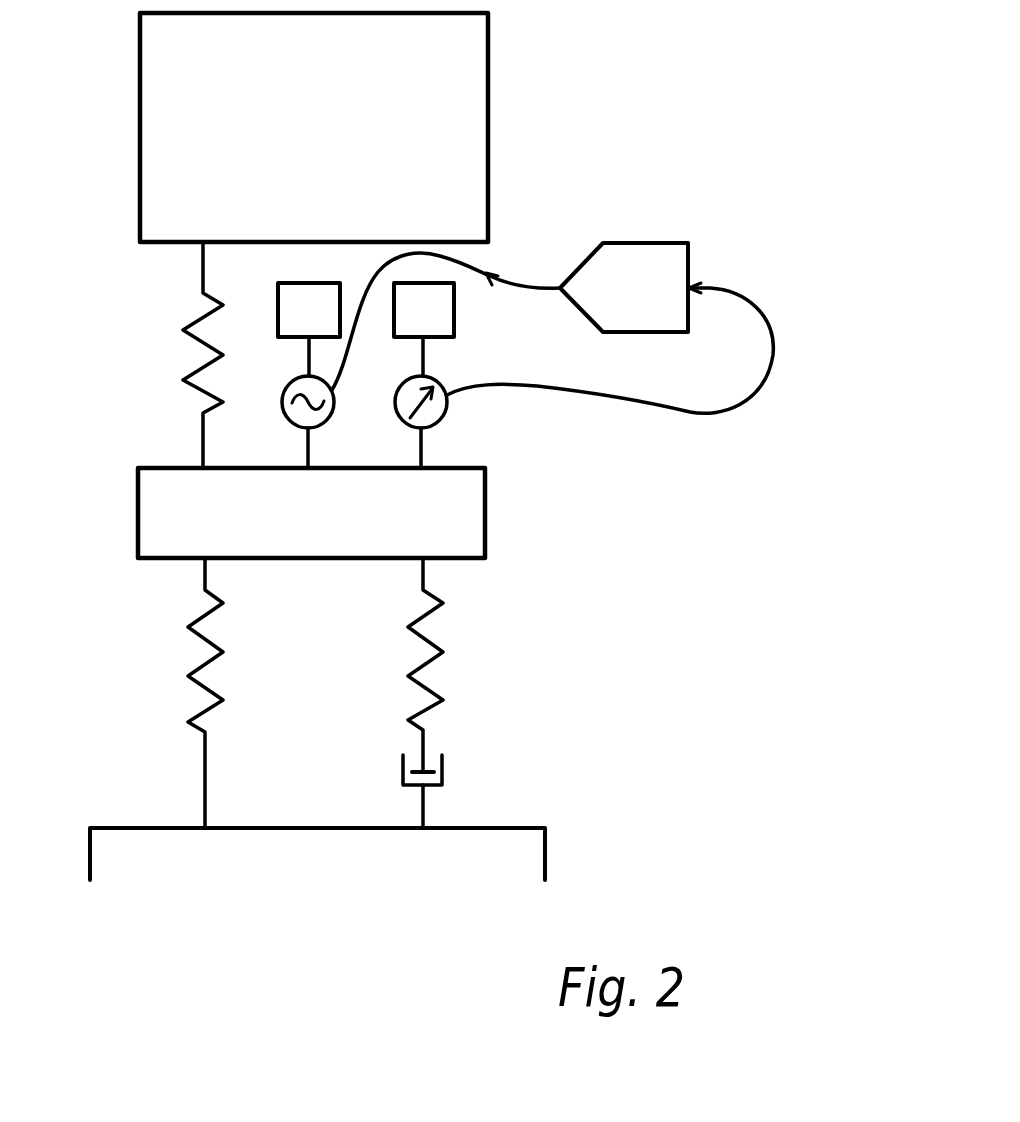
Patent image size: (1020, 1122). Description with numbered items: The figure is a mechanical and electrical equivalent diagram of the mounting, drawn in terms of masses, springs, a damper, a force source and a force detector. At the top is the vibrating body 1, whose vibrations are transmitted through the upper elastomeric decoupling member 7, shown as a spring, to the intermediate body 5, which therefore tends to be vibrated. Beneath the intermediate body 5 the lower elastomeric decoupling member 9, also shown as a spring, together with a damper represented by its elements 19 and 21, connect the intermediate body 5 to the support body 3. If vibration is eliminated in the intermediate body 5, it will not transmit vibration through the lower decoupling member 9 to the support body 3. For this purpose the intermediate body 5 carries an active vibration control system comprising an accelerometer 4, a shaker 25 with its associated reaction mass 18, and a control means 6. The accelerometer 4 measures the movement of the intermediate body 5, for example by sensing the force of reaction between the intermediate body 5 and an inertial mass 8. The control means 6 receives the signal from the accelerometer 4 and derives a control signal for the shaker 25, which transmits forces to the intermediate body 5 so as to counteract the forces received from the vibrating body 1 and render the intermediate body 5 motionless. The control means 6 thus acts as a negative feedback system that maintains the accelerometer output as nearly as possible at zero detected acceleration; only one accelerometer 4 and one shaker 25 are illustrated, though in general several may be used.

The vibrating body 1 is at (326, 141).
The support body 3 is at (287, 898).
The accelerometer 4 is at (395, 405).
The intermediate body 5 is at (297, 527).
The control means 6 is at (650, 298).
The upper elastomeric decoupling member 7 is at (186, 329).
The inertial mass 8 is at (412, 322).
The lower elastomeric decoupling member 9 is at (190, 622).
The reaction mass 18 is at (293, 322).
The damper piston 19 is at (430, 766).
The damper cylinder 21 is at (442, 773).
The shaker 25 is at (284, 404).